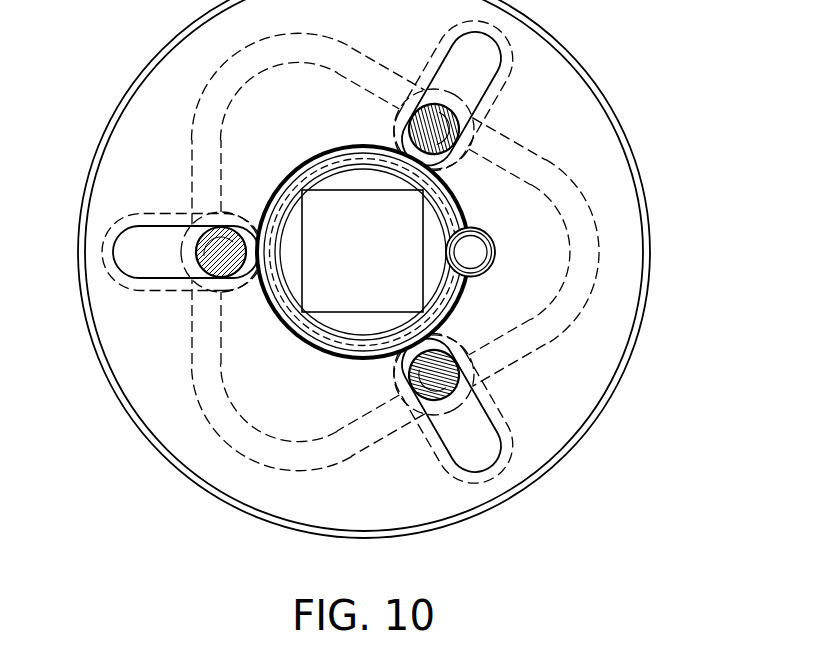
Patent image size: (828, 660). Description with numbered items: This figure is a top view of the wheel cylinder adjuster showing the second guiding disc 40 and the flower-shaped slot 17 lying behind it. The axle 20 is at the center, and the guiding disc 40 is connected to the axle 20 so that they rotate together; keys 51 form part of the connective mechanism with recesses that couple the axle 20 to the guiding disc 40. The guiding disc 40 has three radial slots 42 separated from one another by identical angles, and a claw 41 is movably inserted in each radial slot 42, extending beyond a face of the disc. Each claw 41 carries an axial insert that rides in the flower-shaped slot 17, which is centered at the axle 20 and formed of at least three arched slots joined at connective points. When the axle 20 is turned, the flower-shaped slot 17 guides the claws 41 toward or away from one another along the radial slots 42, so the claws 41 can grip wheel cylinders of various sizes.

The flower-shaped slot 17 is at (180, 137).
The axle 20 is at (477, 252).
The second guiding disc 40 is at (553, 80).
The claw 41 is at (460, 369).
The radial slot 42 is at (452, 447).
The key 51 is at (432, 225).